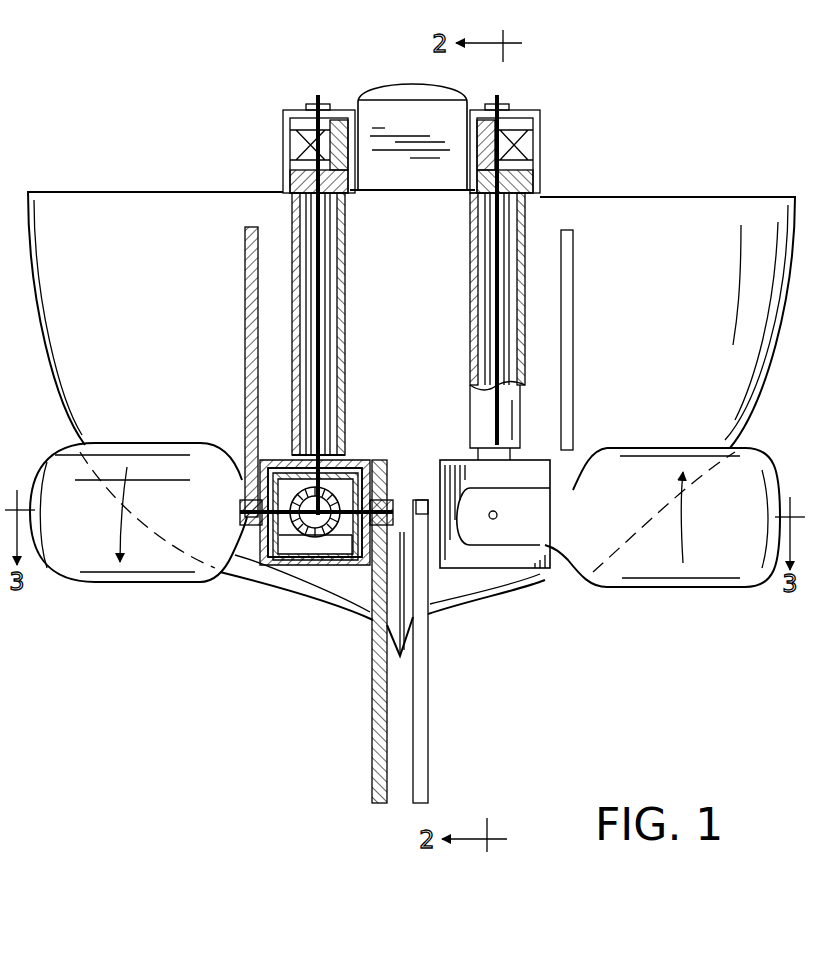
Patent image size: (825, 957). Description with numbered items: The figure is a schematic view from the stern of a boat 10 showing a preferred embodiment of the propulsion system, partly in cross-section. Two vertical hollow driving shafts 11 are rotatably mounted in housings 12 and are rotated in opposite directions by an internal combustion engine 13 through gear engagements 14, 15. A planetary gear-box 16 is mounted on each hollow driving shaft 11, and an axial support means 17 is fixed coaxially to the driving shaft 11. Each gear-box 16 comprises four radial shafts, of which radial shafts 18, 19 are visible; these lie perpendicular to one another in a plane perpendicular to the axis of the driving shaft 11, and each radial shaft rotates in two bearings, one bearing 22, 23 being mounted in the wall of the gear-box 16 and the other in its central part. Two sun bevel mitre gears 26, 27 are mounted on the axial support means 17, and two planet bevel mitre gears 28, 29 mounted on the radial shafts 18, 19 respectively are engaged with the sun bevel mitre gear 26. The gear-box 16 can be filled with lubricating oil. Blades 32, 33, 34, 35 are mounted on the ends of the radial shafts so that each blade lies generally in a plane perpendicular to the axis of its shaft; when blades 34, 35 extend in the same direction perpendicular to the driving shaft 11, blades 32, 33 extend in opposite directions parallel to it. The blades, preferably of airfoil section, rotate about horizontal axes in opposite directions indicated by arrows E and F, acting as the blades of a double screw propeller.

The boat 10 is at (118, 196).
The vertical hollow driving shaft 11 is at (330, 298).
The housing 12 is at (478, 402).
The internal combustion engine 13 is at (397, 92).
The gear engagement 14 is at (338, 112).
The gear engagement 15 is at (300, 168).
The planetary gear-box 16 is at (347, 462).
The axial support means 17 is at (322, 250).
The radial shaft 18 is at (238, 512).
The radial shaft 19 is at (400, 508).
The bearing 22 is at (252, 528).
The bearing 23 is at (358, 474).
The sun bevel mitre gear 26 is at (302, 462).
The sun bevel mitre gear 27 is at (293, 548).
The planet bevel mitre gear 28 is at (286, 548).
The planet bevel mitre gear 29 is at (347, 567).
The blade 32 is at (245, 300).
The blade 33 is at (372, 752).
The blade 34 is at (690, 588).
The blade 35 is at (113, 580).